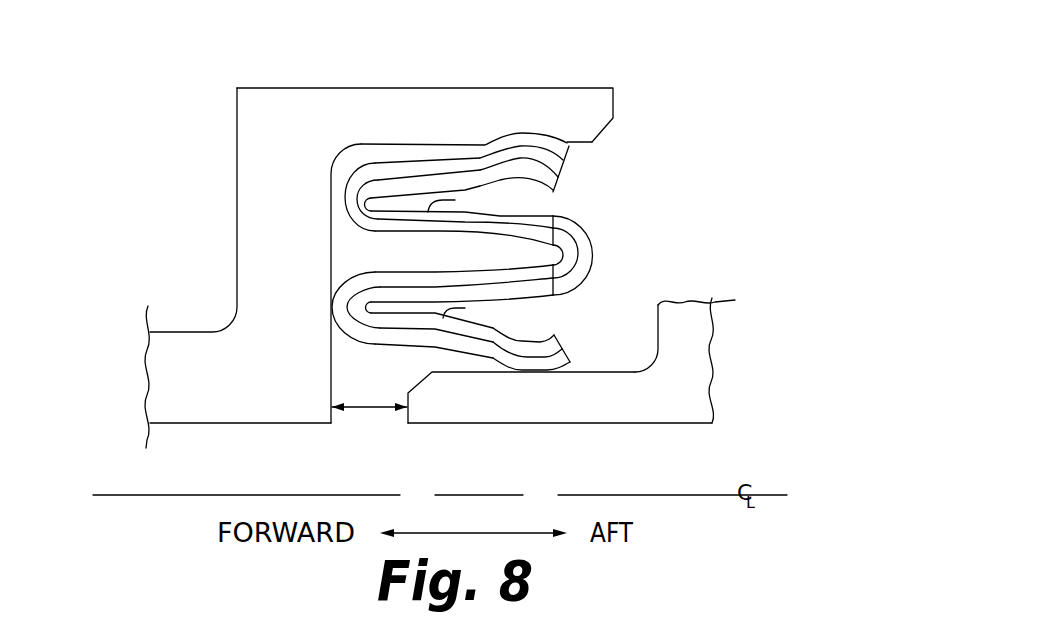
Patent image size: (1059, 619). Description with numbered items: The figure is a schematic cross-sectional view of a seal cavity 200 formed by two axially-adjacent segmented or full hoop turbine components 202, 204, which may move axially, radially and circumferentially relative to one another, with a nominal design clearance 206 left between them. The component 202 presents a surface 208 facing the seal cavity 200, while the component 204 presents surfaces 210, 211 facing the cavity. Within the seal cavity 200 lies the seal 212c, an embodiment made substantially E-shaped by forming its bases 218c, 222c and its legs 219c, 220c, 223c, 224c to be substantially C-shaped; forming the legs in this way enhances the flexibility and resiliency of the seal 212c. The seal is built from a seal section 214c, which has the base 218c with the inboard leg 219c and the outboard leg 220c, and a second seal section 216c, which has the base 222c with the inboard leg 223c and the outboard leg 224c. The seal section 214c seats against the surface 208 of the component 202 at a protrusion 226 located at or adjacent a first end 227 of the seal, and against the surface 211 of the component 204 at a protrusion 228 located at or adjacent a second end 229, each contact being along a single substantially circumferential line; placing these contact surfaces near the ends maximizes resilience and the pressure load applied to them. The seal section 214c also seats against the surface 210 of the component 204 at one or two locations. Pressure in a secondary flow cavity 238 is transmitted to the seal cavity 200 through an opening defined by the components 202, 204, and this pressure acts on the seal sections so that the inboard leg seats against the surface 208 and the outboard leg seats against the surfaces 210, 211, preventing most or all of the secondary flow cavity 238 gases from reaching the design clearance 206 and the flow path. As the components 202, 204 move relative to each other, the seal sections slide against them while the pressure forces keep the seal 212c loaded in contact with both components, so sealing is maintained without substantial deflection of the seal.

The seal cavity 200 is at (657, 50).
The turbine component 202 is at (683, 423).
The turbine component 204 is at (202, 423).
The nominal design clearance 206 is at (372, 408).
The surface 208 is at (608, 372).
The surface 210 is at (334, 424).
The surface 211 is at (567, 143).
The seal 212c is at (660, 232).
The seal section 214c is at (383, 152).
The second seal section 216c is at (542, 206).
The base 218c is at (560, 256).
The inboard leg 219c is at (370, 345).
The outboard leg 220c is at (368, 236).
The base 222c is at (591, 262).
The inboard leg 223c is at (465, 308).
The outboard leg 224c is at (455, 200).
The protrusion 226 is at (532, 373).
The first end 227 is at (558, 347).
The protrusion 228 is at (530, 141).
The second end 229 is at (570, 153).
The secondary flow cavity 238 is at (551, 36).